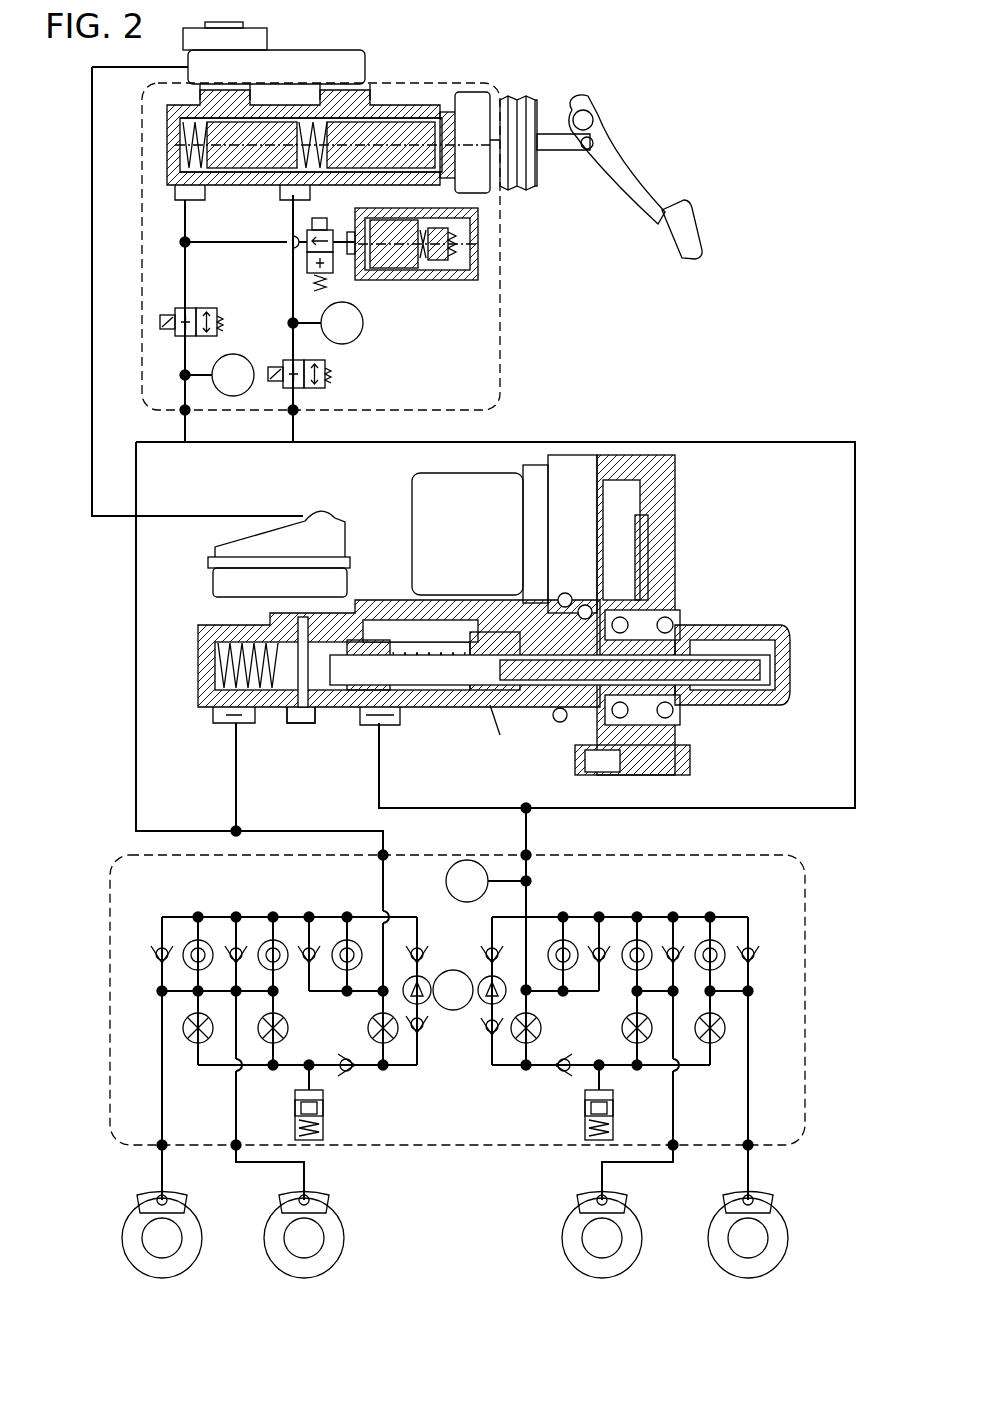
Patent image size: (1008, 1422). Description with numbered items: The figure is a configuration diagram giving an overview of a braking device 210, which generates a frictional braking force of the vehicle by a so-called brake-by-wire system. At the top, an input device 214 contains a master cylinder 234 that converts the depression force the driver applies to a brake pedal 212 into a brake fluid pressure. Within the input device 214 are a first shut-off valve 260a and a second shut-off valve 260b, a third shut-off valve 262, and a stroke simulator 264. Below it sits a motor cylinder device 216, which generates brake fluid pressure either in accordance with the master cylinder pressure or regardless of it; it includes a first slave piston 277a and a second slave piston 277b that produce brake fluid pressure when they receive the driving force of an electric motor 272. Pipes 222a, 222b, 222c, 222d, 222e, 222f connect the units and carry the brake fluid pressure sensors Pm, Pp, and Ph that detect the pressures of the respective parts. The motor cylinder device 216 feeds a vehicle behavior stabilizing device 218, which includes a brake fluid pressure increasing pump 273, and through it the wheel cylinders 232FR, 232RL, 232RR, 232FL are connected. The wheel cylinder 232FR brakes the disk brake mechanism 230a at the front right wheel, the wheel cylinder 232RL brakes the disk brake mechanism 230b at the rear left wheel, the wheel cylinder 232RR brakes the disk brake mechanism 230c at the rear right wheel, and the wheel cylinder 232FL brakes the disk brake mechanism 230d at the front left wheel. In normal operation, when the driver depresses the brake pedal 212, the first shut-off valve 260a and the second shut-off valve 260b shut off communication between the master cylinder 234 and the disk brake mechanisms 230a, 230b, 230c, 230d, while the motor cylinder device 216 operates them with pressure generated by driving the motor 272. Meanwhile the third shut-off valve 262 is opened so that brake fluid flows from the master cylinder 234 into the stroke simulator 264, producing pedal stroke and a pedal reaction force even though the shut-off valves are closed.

The braking device 210 is at (632, 62).
The brake pedal 212 is at (698, 234).
The input device 214 is at (500, 305).
The motor cylinder device 216 is at (672, 485).
The vehicle behavior stabilizing device 218 is at (700, 855).
The pipe 222a is at (810, 442).
The pipe 222b is at (428, 808).
The pipe 222c is at (530, 822).
The pipe 222d is at (135, 614).
The pipe 222e is at (236, 784).
The pipe 222f is at (306, 831).
The disk brake mechanism 230a is at (792, 1268).
The disk brake mechanism 230b is at (648, 1268).
The disk brake mechanism 230c is at (350, 1268).
The disk brake mechanism 230d is at (208, 1268).
The wheel cylinder 232FL is at (215, 1202).
The wheel cylinder 232RR is at (358, 1202).
The wheel cylinder 232RL is at (655, 1202).
The wheel cylinder 232FR is at (773, 1207).
The master cylinder 234 is at (406, 94).
The first shut-off valve 260a is at (332, 360).
The second shut-off valve 260b is at (198, 308).
The third shut-off valve 262 is at (320, 230).
The stroke simulator 264 is at (492, 230).
The electric motor 272 is at (416, 508).
The brake fluid pressure increasing pump 273 is at (462, 1012).
The first slave piston 277a is at (500, 735).
The second slave piston 277b is at (340, 722).